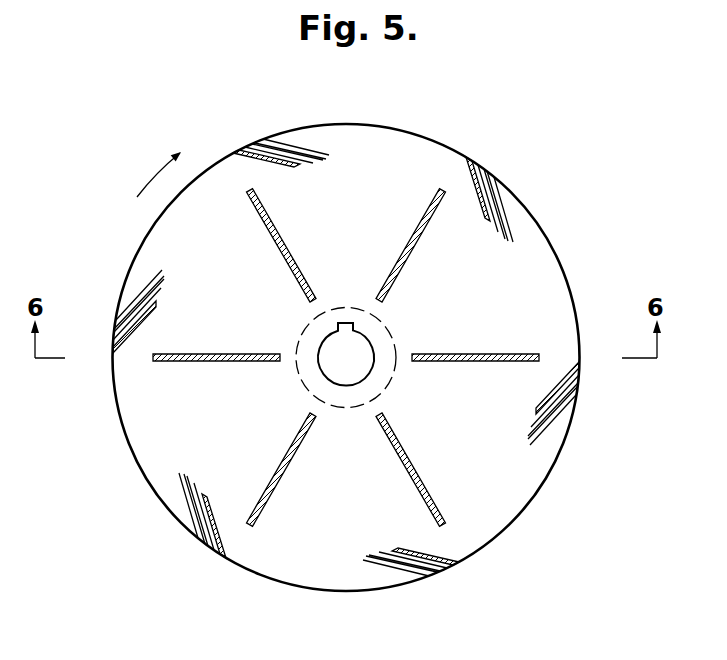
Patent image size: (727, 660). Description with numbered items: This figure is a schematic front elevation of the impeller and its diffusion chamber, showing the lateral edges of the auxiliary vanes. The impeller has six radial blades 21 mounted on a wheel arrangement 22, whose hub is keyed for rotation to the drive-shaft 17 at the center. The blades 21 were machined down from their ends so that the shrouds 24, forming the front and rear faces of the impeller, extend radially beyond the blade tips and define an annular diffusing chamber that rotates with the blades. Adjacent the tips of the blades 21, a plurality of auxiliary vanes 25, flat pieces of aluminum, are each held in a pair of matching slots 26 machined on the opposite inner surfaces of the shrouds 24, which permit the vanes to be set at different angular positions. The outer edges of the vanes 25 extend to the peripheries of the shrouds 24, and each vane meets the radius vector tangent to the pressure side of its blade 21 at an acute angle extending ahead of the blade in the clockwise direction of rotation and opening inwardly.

The drive-shaft 17 is at (355, 367).
The radial blades 21 is at (400, 257).
The wheel arrangement 22 is at (398, 320).
The shrouds 24 is at (545, 270).
The auxiliary vanes 25 is at (467, 174).
The matching slots 26 is at (498, 182).